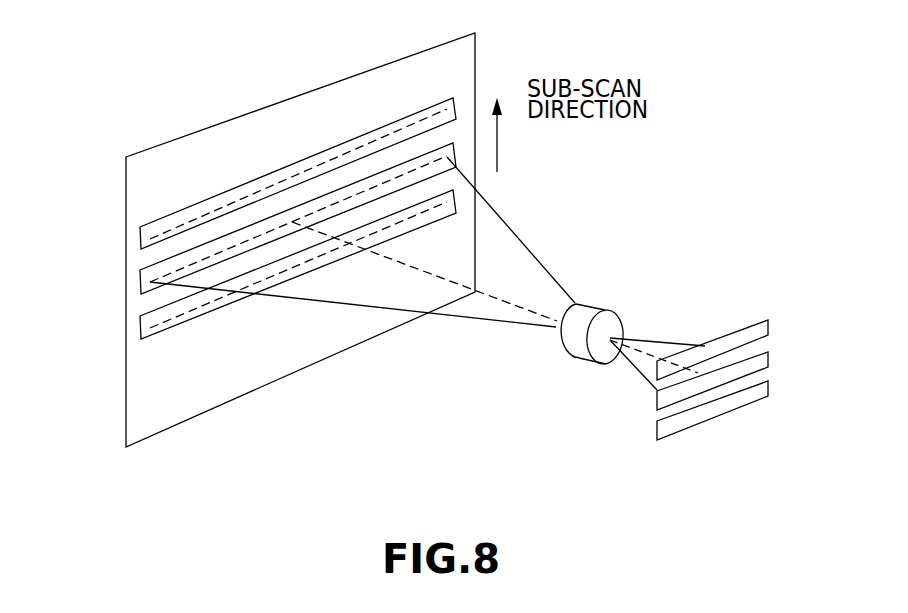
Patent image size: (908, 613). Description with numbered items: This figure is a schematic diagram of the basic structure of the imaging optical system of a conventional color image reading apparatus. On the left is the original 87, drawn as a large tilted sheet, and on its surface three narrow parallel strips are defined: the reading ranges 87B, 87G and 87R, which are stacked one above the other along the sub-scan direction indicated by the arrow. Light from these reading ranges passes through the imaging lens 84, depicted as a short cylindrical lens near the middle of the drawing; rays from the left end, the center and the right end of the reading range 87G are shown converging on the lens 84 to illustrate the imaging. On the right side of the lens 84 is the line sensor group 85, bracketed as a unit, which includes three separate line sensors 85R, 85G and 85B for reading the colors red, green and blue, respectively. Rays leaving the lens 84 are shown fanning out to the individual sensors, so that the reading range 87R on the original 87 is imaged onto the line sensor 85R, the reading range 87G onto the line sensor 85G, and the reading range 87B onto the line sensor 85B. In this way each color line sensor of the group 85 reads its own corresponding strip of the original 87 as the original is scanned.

The original 87 is at (138, 398).
The reading range for blue 87B is at (140, 244).
The reading range for green 87G is at (140, 288).
The reading range for red 87R is at (140, 332).
The imaging lens 84 is at (586, 356).
The line sensor group 85 is at (711, 376).
The line sensor for R 85R is at (770, 321).
The line sensor for G 85G is at (770, 353).
The line sensor for B 85B is at (770, 382).